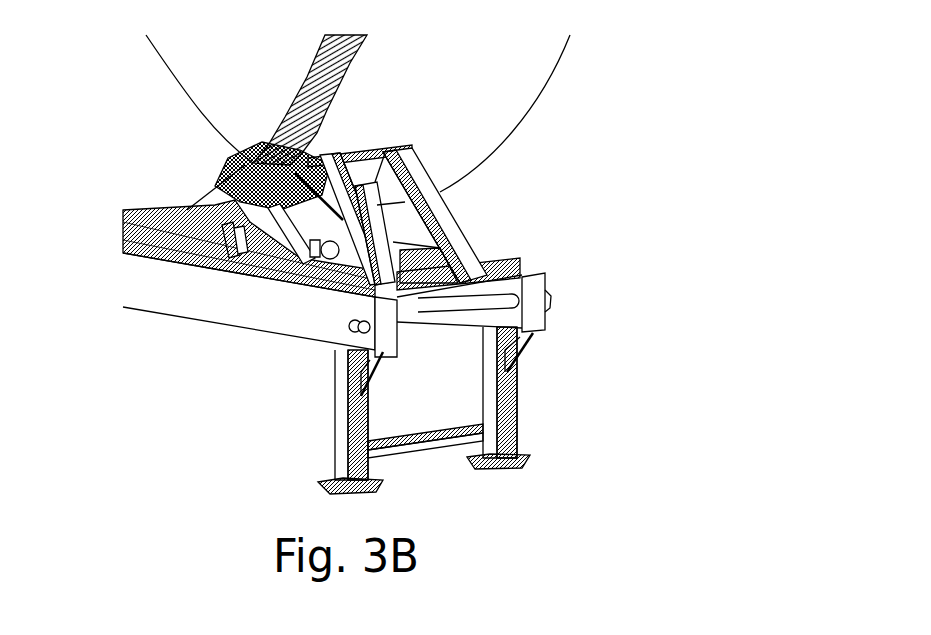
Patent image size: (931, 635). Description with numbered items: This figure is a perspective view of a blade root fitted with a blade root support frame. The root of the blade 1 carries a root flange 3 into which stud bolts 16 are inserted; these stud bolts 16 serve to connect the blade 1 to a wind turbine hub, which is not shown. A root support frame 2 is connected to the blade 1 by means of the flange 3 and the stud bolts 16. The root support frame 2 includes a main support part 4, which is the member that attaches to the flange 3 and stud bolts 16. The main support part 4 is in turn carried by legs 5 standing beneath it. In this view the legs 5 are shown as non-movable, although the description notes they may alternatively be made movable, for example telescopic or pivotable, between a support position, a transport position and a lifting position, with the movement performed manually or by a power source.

The blade 1 is at (548, 118).
The root support frame 2 is at (565, 248).
The root flange 3 is at (358, 60).
The main support part 4 is at (218, 312).
The legs 5 is at (340, 410).
The stud bolts 16 is at (310, 80).